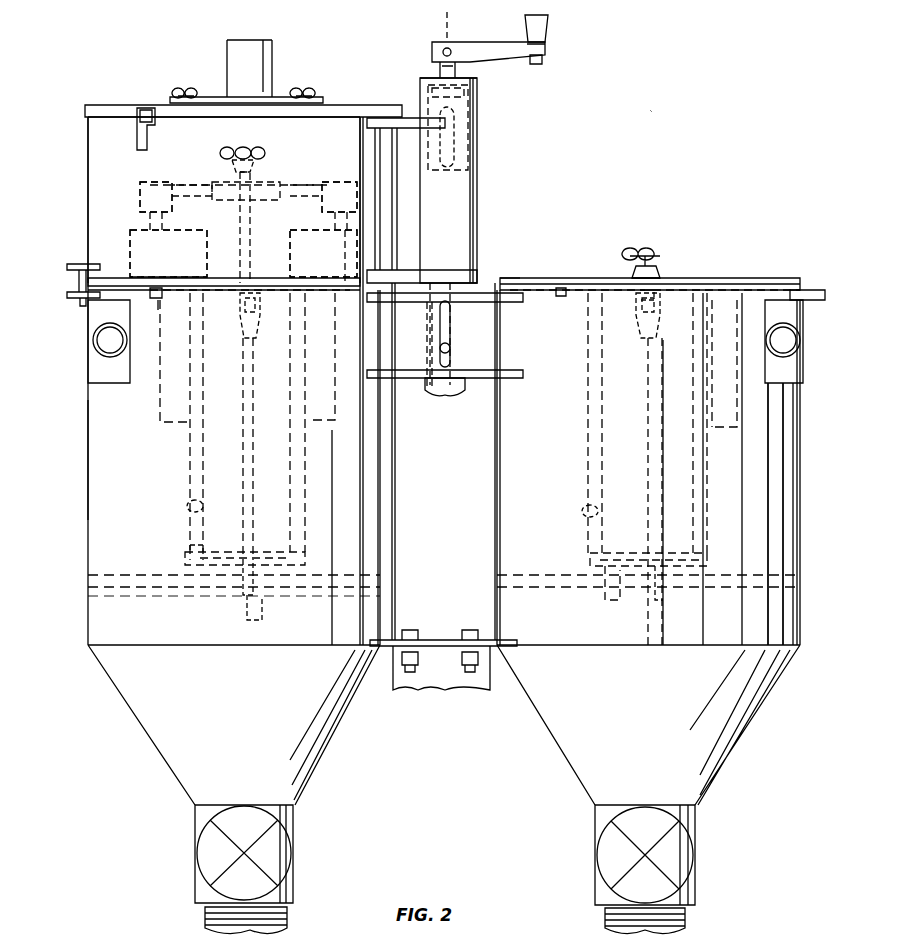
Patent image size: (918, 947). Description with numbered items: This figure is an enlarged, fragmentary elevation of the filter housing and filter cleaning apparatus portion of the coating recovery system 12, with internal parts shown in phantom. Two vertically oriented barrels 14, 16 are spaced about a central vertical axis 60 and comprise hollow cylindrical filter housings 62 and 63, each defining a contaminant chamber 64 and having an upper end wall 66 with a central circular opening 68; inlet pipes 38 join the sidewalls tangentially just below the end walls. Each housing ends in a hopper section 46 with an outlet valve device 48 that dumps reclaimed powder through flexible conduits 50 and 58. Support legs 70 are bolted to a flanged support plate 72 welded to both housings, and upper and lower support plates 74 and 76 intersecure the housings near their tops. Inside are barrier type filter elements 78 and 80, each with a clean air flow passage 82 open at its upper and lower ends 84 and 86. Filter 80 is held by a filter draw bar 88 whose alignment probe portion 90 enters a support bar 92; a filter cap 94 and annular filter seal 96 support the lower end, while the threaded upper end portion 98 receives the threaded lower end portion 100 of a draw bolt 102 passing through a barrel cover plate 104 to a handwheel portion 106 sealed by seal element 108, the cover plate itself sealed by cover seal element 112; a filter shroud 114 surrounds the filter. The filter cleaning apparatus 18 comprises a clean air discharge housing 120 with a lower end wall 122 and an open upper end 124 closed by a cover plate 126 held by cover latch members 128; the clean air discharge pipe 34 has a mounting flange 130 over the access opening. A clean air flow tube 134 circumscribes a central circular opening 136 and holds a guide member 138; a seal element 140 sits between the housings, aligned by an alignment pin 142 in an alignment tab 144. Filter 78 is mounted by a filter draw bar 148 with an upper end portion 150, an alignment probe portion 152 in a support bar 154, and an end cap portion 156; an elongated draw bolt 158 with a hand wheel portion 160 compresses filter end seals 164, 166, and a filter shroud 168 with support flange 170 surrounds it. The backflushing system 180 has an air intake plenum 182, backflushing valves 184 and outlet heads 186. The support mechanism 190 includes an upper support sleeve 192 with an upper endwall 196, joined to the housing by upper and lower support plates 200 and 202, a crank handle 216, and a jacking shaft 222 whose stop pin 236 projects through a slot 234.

The recovery system 12 is at (610, 112).
The cyclonic barrel 14 is at (84, 458).
The barrel 16 is at (803, 496).
The filter cleaning apparatus 18 is at (86, 184).
The clean air discharge pipe 34 is at (226, 50).
The inlet pipe 38 is at (92, 340).
The hopper section 46 is at (145, 742).
The outlet valve device 48 is at (193, 836).
The flexible conduit 50 is at (203, 915).
The flexible conduit 58 is at (688, 918).
The central vertical axis 60 is at (444, 24).
The filter housing 62 is at (86, 494).
The filter housing 63 is at (804, 536).
The contaminant chamber 64 is at (110, 538).
The upper end wall 66 is at (530, 276).
The central circular opening 68 is at (158, 300).
The support leg 70 is at (385, 690).
The flanged support plate 72 is at (508, 638).
The upper support plate 74 is at (515, 303).
The lower support plate 76 is at (515, 380).
The filter element 78 is at (186, 468).
The filter element 80 is at (585, 462).
The clean air flow passage 82 is at (188, 503).
The upper end 84 is at (290, 290).
The lower end 86 is at (306, 548).
The filter draw bar 88 is at (650, 490).
The alignment probe portion 90 is at (640, 598).
The filter guide and support bar 92 is at (660, 602).
The filter cap 94 is at (710, 568).
The annular filter seal 96 is at (704, 553).
The upper end portion 98 is at (660, 325).
The threaded lower end portion 100 is at (644, 312).
The draw bolt 102 is at (655, 290).
The barrel cover plate 104 is at (745, 276).
The handwheel portion 106 is at (648, 240).
The annular seal element 108 is at (668, 270).
The cover seal element 112 is at (805, 288).
The filter shroud 114 is at (775, 408).
The clean air discharge housing 120 is at (86, 160).
The lower end wall 122 is at (125, 288).
The open upper end 124 is at (118, 104).
The cover plate 126 is at (384, 116).
The cover latch member 128 is at (134, 120).
The mounting flange 130 is at (178, 88).
The clean air flow tube 134 is at (290, 110).
The central circular opening 136 is at (168, 266).
The guide member 138 is at (275, 246).
The annular seal element 140 is at (338, 296).
The alignment pin 142 is at (66, 268).
The alignment tab 144 is at (66, 294).
The filter draw bar 148 is at (250, 468).
The upper end portion 150 is at (262, 343).
The alignment probe portion 152 is at (268, 594).
The support bar 154 is at (200, 588).
The end cap portion 156 is at (185, 556).
The draw bolt 158 is at (262, 175).
The hand wheel portion 160 is at (254, 146).
The filter end seal 164 is at (350, 272).
The filter end seal 166 is at (188, 550).
The filter shroud 168 is at (158, 418).
The support flange 170 is at (330, 322).
The filter backflushing system 180 is at (122, 198).
The air intake plenum 182 is at (128, 232).
The backflushing valve 184 is at (142, 182).
The backflushing outlet head 186 is at (210, 180).
The support mechanism 190 is at (503, 142).
The upper support sleeve 192 is at (477, 185).
The upper endwall 196 is at (470, 70).
The upper support plate 200 is at (414, 96).
The lower support plate 202 is at (407, 270).
The crank handle 216 is at (468, 42).
The jacking shaft 222 is at (445, 398).
The slot 234 is at (440, 330).
The stop pin 236 is at (450, 348).